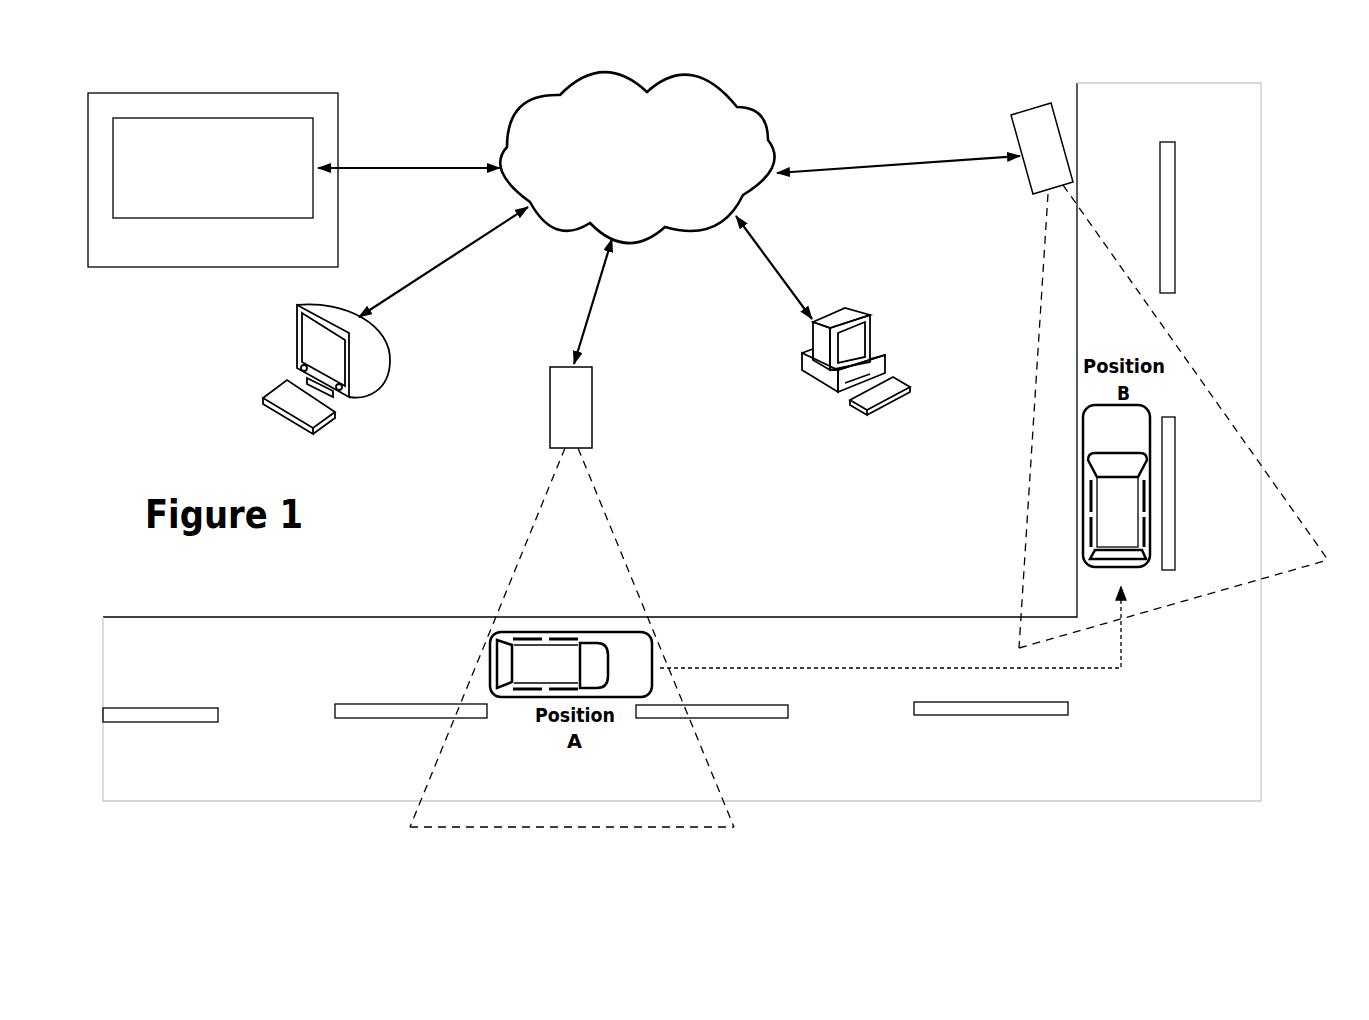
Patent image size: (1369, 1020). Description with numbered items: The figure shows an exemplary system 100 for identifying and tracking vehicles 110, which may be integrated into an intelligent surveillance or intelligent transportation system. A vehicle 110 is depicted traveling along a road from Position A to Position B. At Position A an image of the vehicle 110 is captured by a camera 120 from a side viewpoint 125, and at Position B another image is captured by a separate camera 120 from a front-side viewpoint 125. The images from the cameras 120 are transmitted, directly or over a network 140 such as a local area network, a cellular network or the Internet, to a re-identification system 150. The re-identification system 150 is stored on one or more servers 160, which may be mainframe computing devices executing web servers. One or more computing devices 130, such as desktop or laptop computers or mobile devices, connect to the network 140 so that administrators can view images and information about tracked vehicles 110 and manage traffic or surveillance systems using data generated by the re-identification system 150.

The system 100 is at (172, 70).
The vehicle 110 is at (547, 632).
The camera 120 is at (592, 409).
The viewpoint 125 is at (545, 503).
The computing device 130 is at (350, 398).
The network 140 is at (690, 236).
The re-identification system 150 is at (314, 128).
The server 160 is at (208, 268).